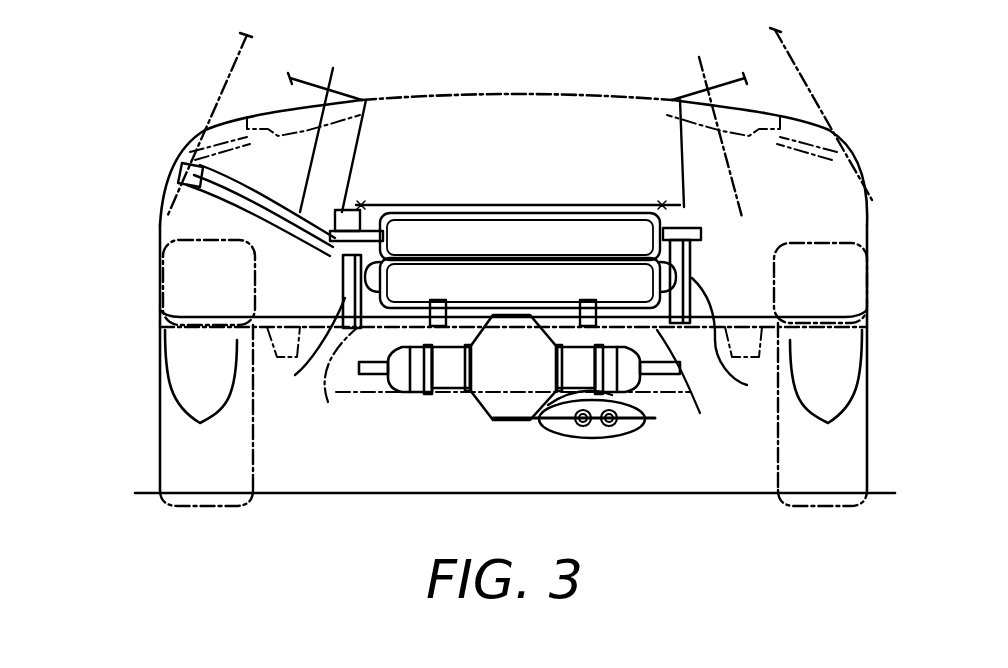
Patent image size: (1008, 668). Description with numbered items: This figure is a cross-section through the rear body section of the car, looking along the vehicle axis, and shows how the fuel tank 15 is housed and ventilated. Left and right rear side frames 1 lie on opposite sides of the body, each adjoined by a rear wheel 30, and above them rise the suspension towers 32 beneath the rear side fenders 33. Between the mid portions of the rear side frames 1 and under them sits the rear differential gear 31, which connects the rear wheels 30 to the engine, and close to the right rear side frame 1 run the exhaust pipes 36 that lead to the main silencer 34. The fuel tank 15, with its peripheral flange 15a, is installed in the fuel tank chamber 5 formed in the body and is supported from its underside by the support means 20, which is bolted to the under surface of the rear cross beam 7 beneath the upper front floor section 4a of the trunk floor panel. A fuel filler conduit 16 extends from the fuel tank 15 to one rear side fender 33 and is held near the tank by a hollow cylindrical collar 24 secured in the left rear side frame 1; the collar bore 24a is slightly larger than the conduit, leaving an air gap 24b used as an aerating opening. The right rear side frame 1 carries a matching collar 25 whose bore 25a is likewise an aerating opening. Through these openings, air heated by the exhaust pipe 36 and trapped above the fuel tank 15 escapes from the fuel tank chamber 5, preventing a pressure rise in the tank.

The rear side frame 1 is at (513, 338).
The upper front floor section 4a is at (516, 210).
The fuel tank chamber 5 is at (469, 210).
The rear cross beam 7 is at (688, 386).
The fuel tank 15 is at (596, 213).
The peripheral flange 15a is at (345, 295).
The fuel filler conduit 16 is at (197, 185).
The support means 20 is at (336, 379).
The collar 24 is at (343, 263).
The bore 24a is at (297, 198).
The air gap 24b is at (376, 208).
The collar 25 is at (705, 247).
The bore 25a is at (702, 240).
The rear wheel 30 is at (163, 423).
The rear differential gear 31 is at (487, 383).
The suspension tower 32 is at (363, 98).
The rear side fender 33 is at (160, 196).
The main silencer 34 is at (553, 427).
The exhaust pipe 36 is at (626, 433).